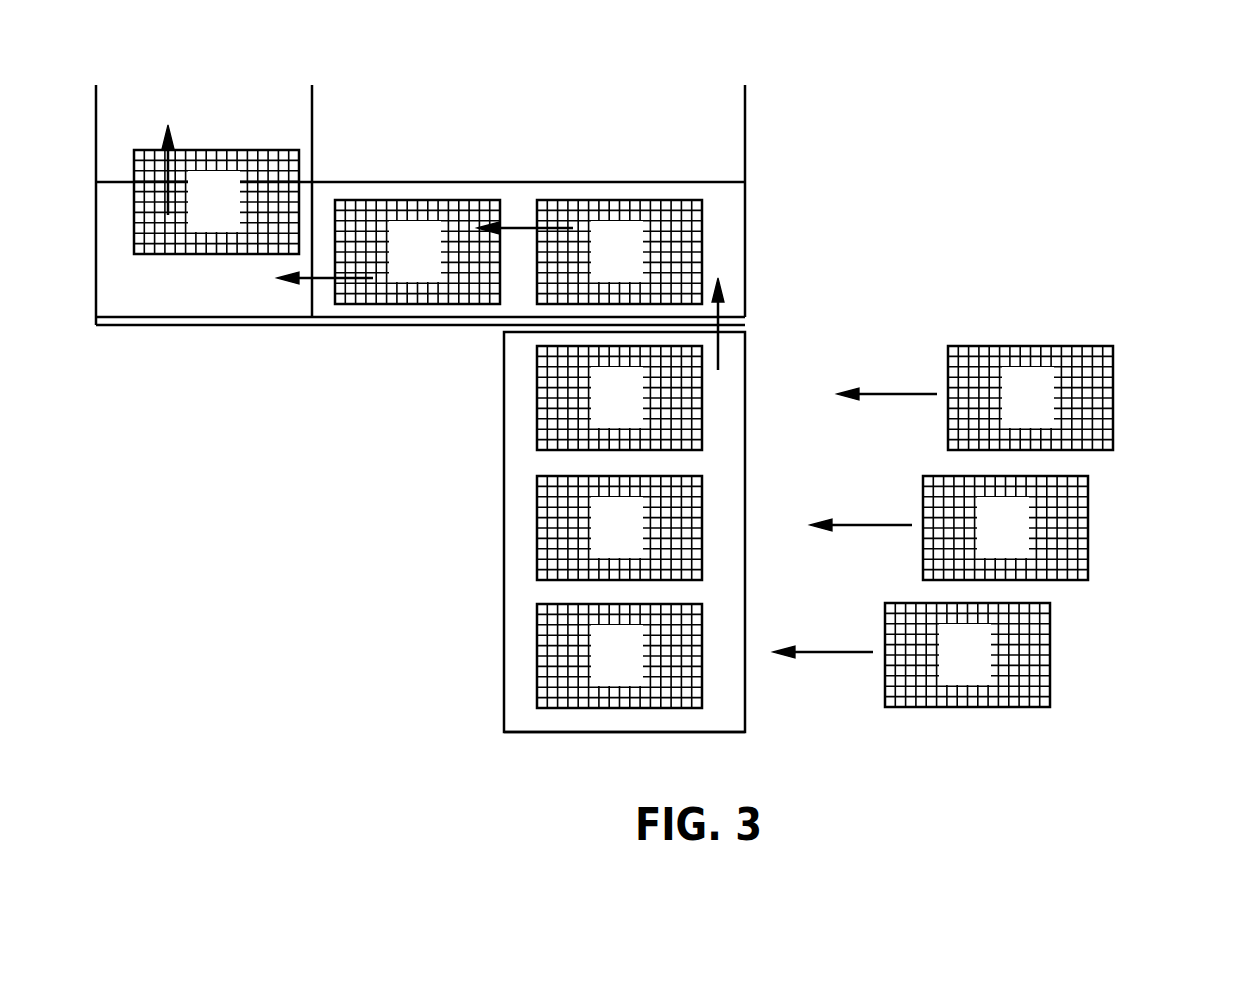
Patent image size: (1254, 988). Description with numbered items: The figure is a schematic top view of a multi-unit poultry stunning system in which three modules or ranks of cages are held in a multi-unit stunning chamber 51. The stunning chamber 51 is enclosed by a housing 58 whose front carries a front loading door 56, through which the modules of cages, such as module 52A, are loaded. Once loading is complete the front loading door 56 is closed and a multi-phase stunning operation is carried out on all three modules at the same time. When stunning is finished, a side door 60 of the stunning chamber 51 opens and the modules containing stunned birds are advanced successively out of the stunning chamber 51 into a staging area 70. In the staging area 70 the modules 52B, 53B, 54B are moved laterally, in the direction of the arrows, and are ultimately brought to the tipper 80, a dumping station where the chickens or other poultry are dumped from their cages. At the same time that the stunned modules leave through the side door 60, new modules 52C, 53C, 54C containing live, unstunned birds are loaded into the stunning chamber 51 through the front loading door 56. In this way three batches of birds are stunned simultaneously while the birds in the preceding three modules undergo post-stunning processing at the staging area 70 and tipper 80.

The tipper 80 is at (148, 75).
The staging area 70 is at (725, 153).
The side door 60 is at (537, 328).
The front loading door 56 is at (747, 372).
The housing 58 is at (685, 732).
The multi-unit stunning chamber 51 is at (450, 568).
The module 52A is at (538, 423).
The module 52B is at (198, 257).
The module 52C is at (1038, 346).
The module 53B is at (363, 200).
The module 53C is at (1088, 540).
The module 54B is at (640, 200).
The module 54C is at (537, 655).